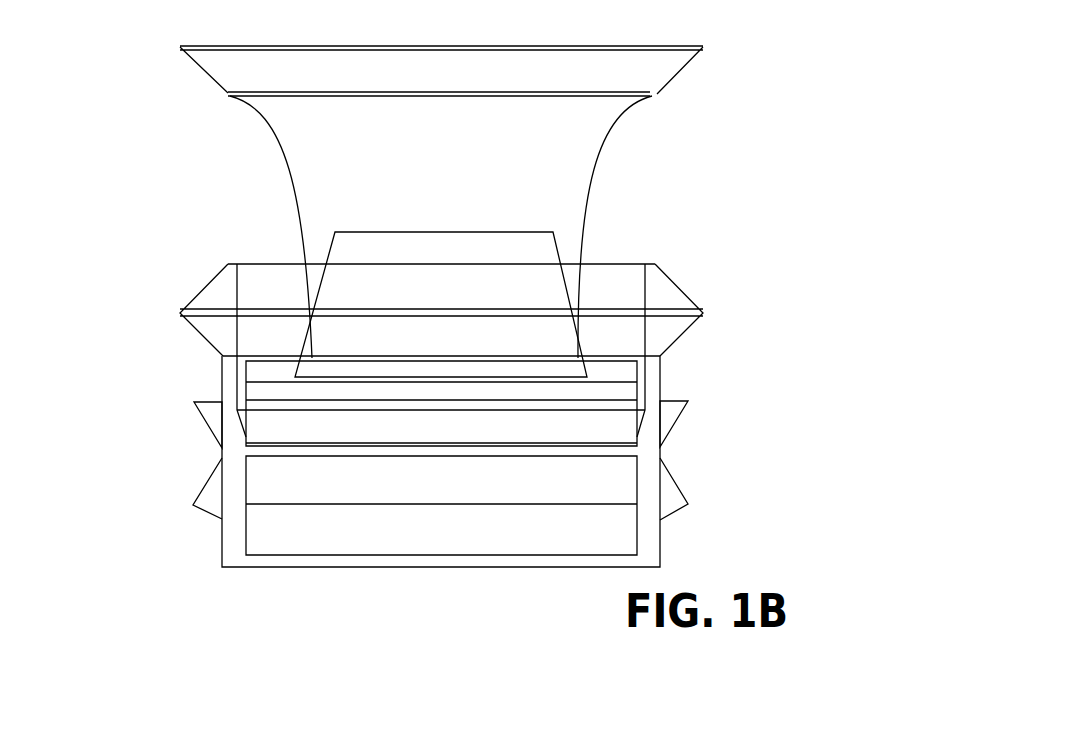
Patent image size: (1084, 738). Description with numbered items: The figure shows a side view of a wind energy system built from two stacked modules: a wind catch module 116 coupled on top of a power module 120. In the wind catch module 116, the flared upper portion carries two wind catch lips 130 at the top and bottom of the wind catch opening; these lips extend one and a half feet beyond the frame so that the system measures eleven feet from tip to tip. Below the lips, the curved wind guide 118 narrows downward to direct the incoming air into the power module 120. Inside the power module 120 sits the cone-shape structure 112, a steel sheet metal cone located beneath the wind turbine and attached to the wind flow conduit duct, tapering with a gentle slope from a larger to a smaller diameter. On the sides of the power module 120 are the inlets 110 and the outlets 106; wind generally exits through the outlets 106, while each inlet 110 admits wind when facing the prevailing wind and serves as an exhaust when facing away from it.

The outlets 106 is at (197, 492).
The inlets 110 is at (197, 430).
The cone-shape structure 112 is at (307, 427).
The wind catch module 116 is at (842, 55).
The wind guide 118 is at (572, 218).
The power module 120 is at (843, 380).
The wind catch lips 130 is at (662, 340).